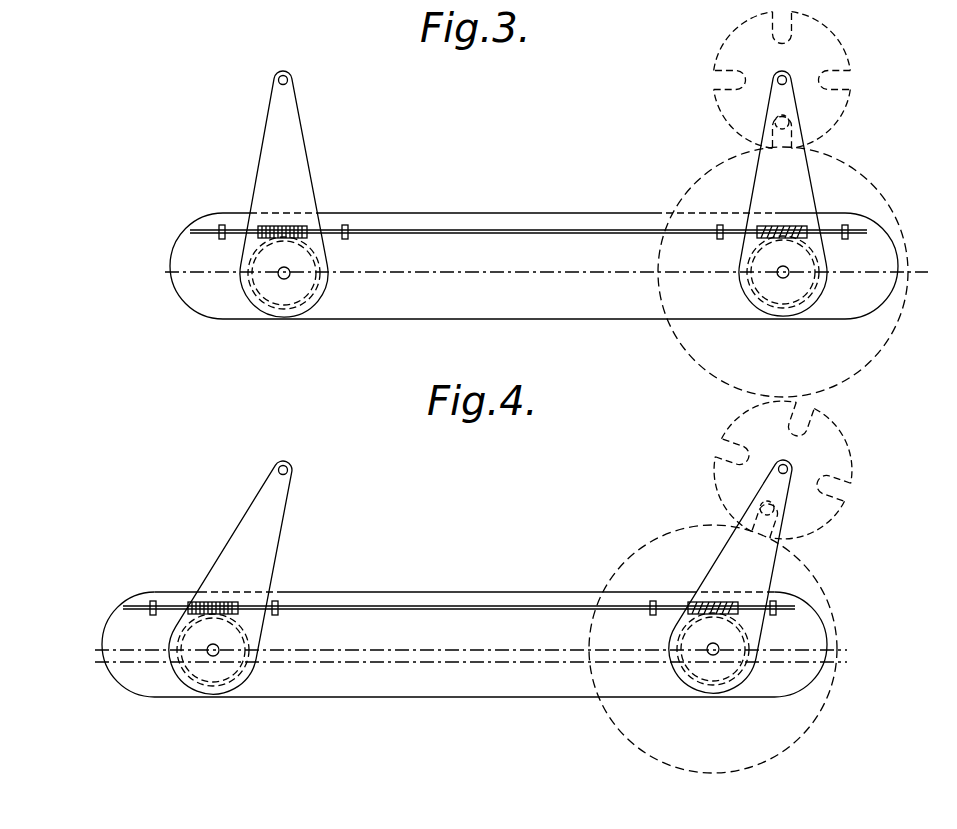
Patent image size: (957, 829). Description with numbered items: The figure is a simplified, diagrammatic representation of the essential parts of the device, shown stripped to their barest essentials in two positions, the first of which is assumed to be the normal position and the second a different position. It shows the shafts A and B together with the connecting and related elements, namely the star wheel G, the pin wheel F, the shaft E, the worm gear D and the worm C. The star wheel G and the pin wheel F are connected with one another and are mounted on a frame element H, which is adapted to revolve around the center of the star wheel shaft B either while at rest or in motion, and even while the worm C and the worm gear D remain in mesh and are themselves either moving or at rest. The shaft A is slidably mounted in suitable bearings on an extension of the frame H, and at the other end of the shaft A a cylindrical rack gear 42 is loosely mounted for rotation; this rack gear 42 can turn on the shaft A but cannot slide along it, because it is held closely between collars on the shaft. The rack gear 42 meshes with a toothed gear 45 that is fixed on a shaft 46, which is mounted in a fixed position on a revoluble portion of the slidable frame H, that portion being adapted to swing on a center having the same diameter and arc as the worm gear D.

In FIG. 3, the shaft A is at (528, 232).
In FIG. 4, the shaft A is at (353, 608).
In FIG. 3, the shaft B is at (787, 78).
In FIG. 4, the shaft B is at (792, 467).
In FIG. 3, the worm C is at (783, 193).
In FIG. 4, the worm C is at (730, 576).
In FIG. 3, the worm gear D is at (802, 280).
In FIG. 4, the worm gear D is at (748, 655).
In FIG. 3, the shaft E is at (780, 275).
In FIG. 4, the shaft E is at (708, 652).
In FIG. 3, the pin wheel F is at (835, 180).
In FIG. 4, the pin wheel F is at (810, 588).
In FIG. 3, the star wheel G is at (828, 115).
In FIG. 4, the star wheel G is at (825, 513).
In FIG. 3, the frame element H is at (292, 168).
In FIG. 4, the frame element H is at (262, 542).
In FIG. 3, the cylindrical rack gear 42 is at (283, 230).
In FIG. 4, the cylindrical rack gear 42 is at (217, 607).
In FIG. 3, the toothed gear 45 is at (308, 288).
In FIG. 4, the toothed gear 45 is at (238, 652).
In FIG. 3, the shaft 46 is at (284, 277).
In FIG. 4, the shaft 46 is at (217, 653).